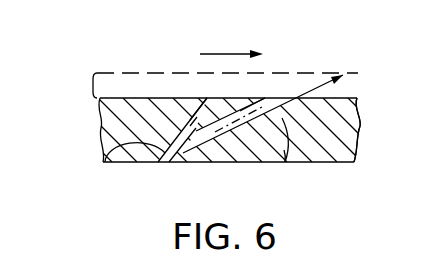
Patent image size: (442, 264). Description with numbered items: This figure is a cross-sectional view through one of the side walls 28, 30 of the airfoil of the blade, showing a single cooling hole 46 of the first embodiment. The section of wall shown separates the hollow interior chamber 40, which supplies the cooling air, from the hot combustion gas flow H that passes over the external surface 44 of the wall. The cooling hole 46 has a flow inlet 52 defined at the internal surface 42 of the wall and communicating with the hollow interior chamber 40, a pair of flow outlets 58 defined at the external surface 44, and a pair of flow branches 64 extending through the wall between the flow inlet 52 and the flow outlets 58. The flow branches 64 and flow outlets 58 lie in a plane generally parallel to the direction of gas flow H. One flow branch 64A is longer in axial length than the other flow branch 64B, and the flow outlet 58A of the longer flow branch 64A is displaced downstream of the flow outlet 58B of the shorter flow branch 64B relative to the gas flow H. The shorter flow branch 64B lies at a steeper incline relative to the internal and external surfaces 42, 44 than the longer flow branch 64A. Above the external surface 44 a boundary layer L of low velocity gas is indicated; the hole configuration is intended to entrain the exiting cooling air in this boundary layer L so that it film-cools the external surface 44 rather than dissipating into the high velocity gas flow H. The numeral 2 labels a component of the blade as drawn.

The gas turbine engine component 2 is at (436, 120).
The side wall 28 is at (362, 125).
The side wall 30 is at (357, 130).
The hollow interior chamber 40 is at (210, 197).
The internal surface 42 is at (326, 162).
The external surface 44 is at (353, 96).
The cooling hole 46 is at (170, 85).
The flow inlet 52 is at (163, 164).
The flow outlets 58 is at (258, 89).
The flow outlet of the longer flow branch 58A is at (288, 97).
The flow outlet of the shorter flow branch 58B is at (212, 97).
The flow branches 64 is at (239, 148).
The longer flow branch 64A is at (288, 162).
The shorter flow branch 64B is at (107, 162).
The hot combustion gas flow H is at (230, 53).
The boundary layer L is at (93, 86).